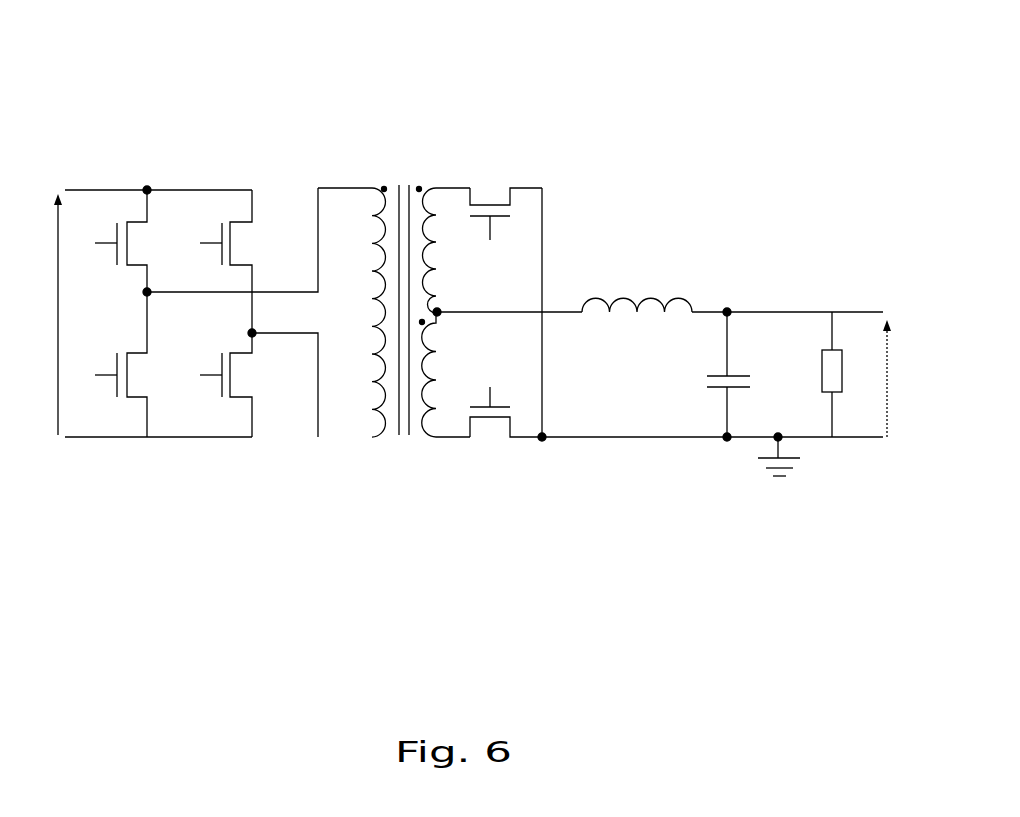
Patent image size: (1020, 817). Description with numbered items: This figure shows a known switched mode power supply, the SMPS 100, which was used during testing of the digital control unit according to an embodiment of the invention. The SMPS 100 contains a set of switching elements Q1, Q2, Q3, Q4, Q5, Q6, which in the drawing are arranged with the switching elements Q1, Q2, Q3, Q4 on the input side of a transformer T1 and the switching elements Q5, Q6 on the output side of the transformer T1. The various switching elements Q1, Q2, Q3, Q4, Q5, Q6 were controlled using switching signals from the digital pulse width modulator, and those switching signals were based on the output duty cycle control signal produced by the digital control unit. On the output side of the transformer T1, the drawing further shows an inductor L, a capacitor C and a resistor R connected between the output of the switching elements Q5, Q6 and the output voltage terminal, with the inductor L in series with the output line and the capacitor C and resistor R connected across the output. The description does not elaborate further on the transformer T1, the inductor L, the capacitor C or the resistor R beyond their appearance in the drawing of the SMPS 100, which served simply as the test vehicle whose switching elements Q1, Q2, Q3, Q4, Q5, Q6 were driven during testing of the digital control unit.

The SMPS 100 is at (551, 71).
The switching element Q1 is at (116, 241).
The switching element Q2 is at (221, 261).
The switching element Q3 is at (116, 364).
The switching element Q4 is at (221, 385).
The switching element Q5 is at (506, 218).
The switching element Q6 is at (506, 412).
The transformer T1 is at (394, 312).
The output inductor L is at (637, 295).
The output capacitor C is at (729, 374).
The load resistor R is at (841, 374).